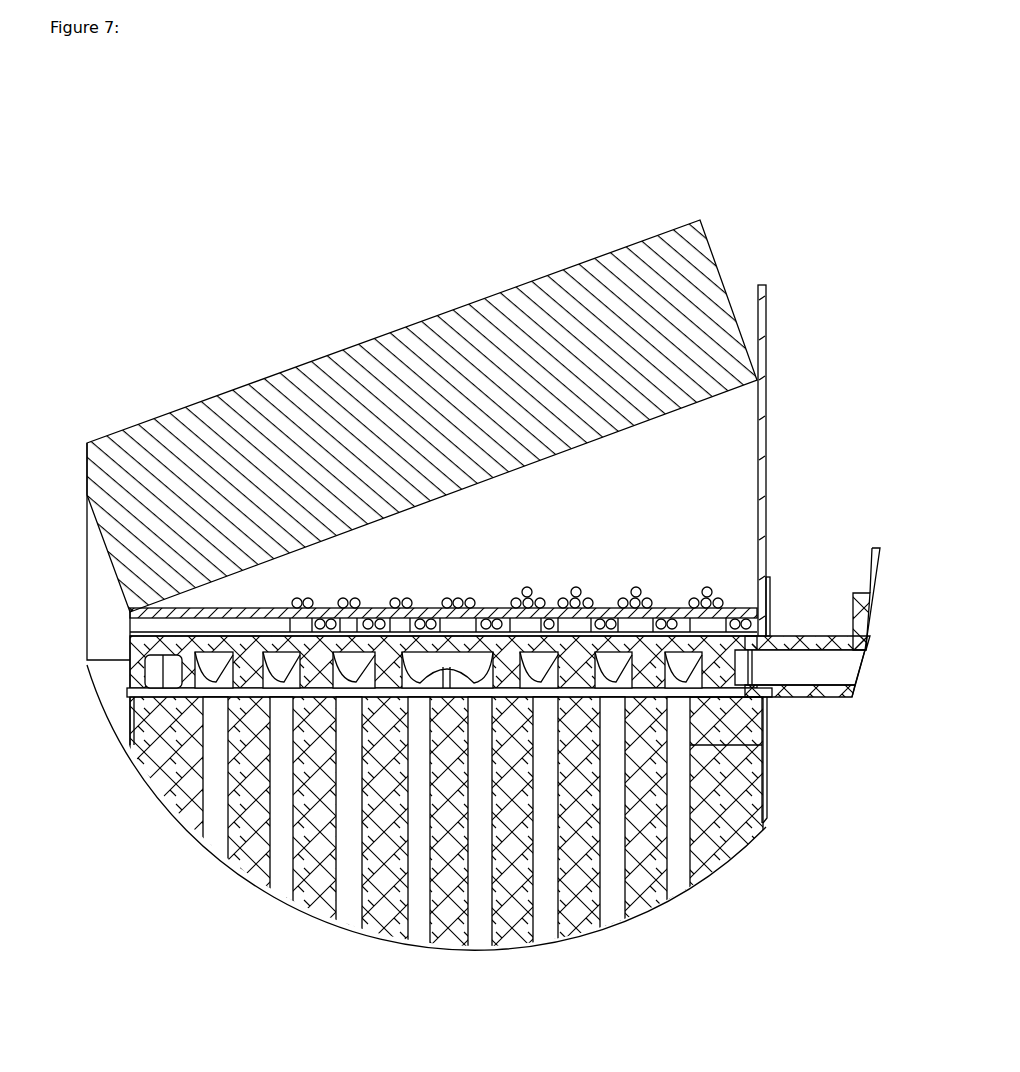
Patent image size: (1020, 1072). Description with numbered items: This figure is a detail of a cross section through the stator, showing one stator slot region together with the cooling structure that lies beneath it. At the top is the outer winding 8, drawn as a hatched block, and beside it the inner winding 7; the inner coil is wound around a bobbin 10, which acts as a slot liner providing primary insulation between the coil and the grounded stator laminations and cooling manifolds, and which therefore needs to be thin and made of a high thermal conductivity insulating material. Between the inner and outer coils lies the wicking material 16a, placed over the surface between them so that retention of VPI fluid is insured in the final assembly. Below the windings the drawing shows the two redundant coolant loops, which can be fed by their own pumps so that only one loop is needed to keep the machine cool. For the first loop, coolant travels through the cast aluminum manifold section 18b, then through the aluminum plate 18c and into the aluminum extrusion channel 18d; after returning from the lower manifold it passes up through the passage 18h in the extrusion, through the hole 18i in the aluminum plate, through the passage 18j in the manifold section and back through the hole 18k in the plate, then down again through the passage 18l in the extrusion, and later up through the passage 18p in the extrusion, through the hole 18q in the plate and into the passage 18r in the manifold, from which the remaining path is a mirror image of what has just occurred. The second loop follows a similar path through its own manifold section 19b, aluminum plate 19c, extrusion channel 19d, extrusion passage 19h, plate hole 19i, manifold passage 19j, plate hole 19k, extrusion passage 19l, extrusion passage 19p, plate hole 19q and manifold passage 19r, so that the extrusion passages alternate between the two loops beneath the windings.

The inner winding 7 is at (657, 537).
The outer winding 8 is at (468, 398).
The bobbin 10 is at (768, 330).
The wicking material 16a is at (392, 535).
The cast aluminum manifold section 18b is at (678, 674).
The aluminum plate 18c is at (685, 700).
The aluminum extrusion channel 18d is at (700, 822).
The passage in aluminum extrusion 18h is at (478, 838).
The hole in aluminum plate 18i is at (478, 702).
The passage in aluminum manifold section 18j is at (443, 668).
The hole in aluminum plate 18k is at (412, 702).
The passage in aluminum extrusion 18l is at (416, 823).
The passage in aluminum extrusion 18p is at (337, 702).
The hole in aluminum plate 18q is at (217, 672).
The passage in aluminum manifold 18r is at (207, 702).
The cast aluminum manifold section 19b is at (700, 740).
The aluminum plate 19c is at (682, 813).
The aluminum extrusion channel 19d is at (618, 703).
The passage in aluminum extrusion 19h is at (553, 705).
The hole in aluminum plate 19i is at (608, 810).
The passage in aluminum manifold section 19j is at (355, 670).
The hole in aluminum plate 19k is at (281, 787).
The passage in aluminum extrusion 19l is at (348, 773).
The passage in aluminum extrusion 19p is at (217, 784).
The hole in aluminum plate 19q is at (273, 700).
The passage in aluminum manifold 19r is at (282, 667).